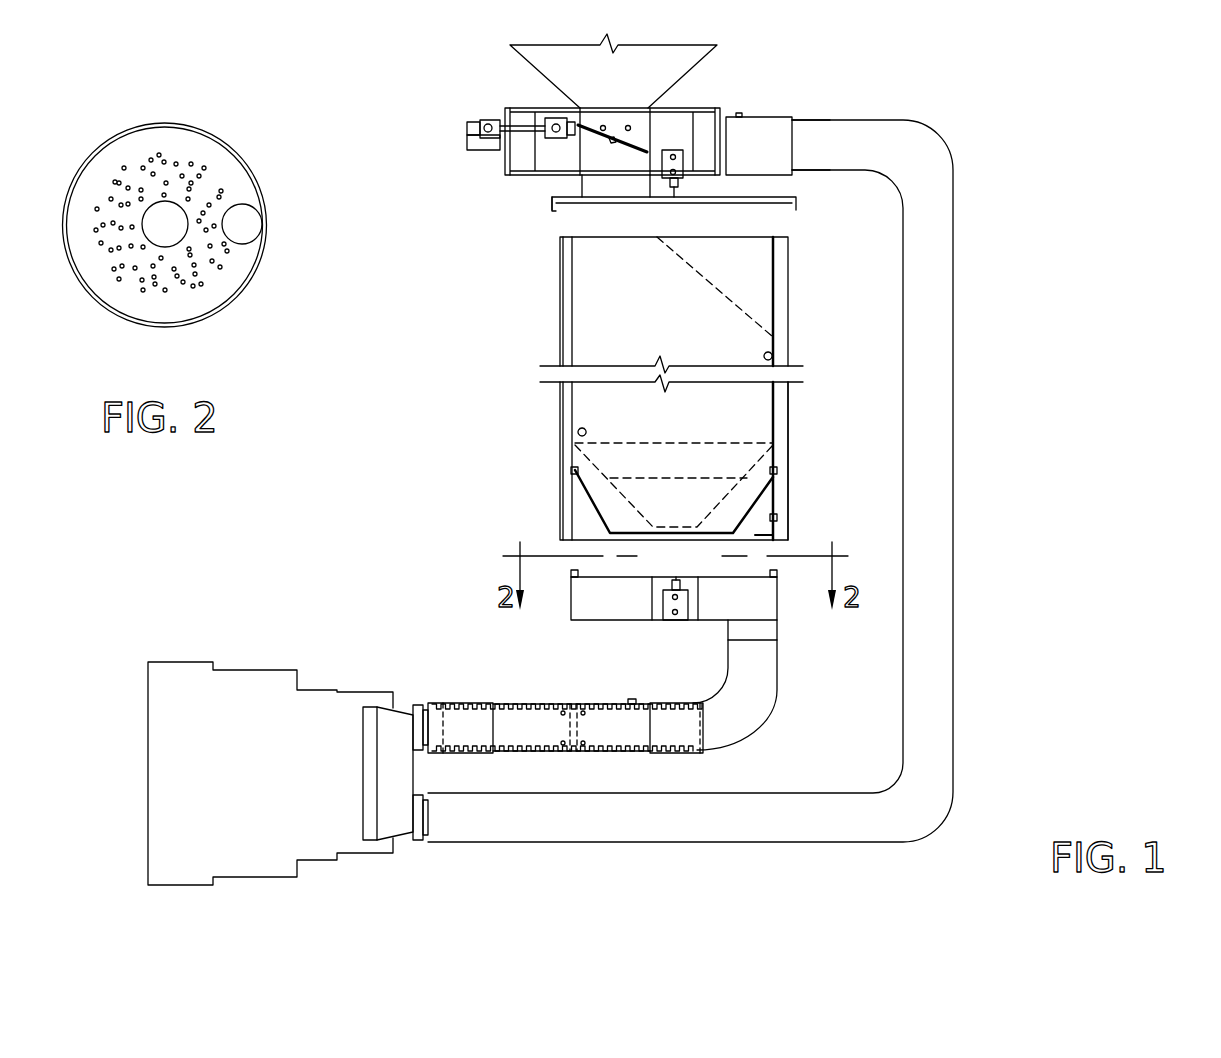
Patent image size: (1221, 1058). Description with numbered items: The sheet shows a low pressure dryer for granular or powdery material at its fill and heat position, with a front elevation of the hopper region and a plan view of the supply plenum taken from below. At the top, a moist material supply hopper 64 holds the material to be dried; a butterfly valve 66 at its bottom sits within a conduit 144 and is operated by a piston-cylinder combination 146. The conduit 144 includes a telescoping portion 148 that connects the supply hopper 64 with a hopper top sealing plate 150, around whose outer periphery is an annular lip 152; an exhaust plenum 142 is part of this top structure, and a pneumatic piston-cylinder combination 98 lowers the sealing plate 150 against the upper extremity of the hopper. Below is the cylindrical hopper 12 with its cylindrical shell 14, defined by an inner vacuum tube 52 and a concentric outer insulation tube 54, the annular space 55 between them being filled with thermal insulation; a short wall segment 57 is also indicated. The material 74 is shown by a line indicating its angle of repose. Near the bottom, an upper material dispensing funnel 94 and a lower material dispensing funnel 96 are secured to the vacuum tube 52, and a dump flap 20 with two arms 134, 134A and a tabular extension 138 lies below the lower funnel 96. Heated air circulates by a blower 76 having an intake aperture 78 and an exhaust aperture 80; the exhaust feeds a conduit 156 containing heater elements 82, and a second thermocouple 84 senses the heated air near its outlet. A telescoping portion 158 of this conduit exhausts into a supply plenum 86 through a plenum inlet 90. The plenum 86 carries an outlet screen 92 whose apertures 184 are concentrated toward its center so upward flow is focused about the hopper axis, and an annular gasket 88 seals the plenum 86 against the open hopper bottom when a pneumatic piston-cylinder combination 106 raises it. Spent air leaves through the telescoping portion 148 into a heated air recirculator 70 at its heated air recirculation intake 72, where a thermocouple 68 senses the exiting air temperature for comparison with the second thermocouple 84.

In FIG. 1, the cylindrical hopper 12 is at (545, 347).
In FIG. 1, the cylindrical shell 14 is at (549, 289).
In FIG. 1, the dump flap 20 is at (620, 520).
In FIG. 1, the vacuum tube 52 is at (772, 352).
In FIG. 1, the insulation tube 54 is at (560, 397).
In FIG. 1, the annular space 55 is at (780, 300).
In FIG. 1, the right lower wall 57 is at (788, 397).
In FIG. 1, the moist material supply hopper 64 is at (678, 45).
In FIG. 1, the butterfly valve 66 is at (635, 130).
In FIG. 1, the thermocouple 68 is at (774, 116).
In FIG. 1, the heated air recirculator 70 is at (953, 145).
In FIG. 1, the heated air recirculation intake 72 is at (800, 120).
In FIG. 1, the material 74 is at (717, 290).
In FIG. 1, the blower 76 is at (292, 658).
In FIG. 1, the intake aperture 78 is at (437, 818).
In FIG. 1, the exhaust aperture 80 is at (436, 695).
In FIG. 1, the heater elements 82 is at (530, 723).
In FIG. 1, the second thermocouple 84 is at (632, 699).
In FIG. 1, the supply plenum 86 is at (620, 627).
In FIG. 1, the annular gasket 88 is at (570, 562).
In FIG. 2, the annular gasket 88 is at (200, 326).
In FIG. 1, the plenum inlet 90 is at (765, 605).
In FIG. 2, the plenum inlet 90 is at (262, 225).
In FIG. 2, the outlet screen 92 is at (232, 278).
In FIG. 1, the upper material dispensing funnel 94 is at (723, 443).
In FIG. 1, the lower material dispensing funnel 96 is at (747, 485).
In FIG. 1, the pneumatic piston-cylinder combination 98 is at (700, 158).
In FIG. 1, the pneumatic piston-cylinder combination 106 is at (690, 624).
In FIG. 1, the arm 134 is at (745, 505).
In FIG. 1, the arm 134A is at (580, 493).
In FIG. 1, the tabular extension 138 is at (773, 535).
In FIG. 1, the exhaust plenum 142 is at (731, 107).
In FIG. 1, the conduit 144 is at (566, 159).
In FIG. 1, the piston-cylinder combination 146 is at (490, 122).
In FIG. 1, the telescoping portion 148 is at (575, 184).
In FIG. 1, the hopper top sealing plate 150 is at (747, 203).
In FIG. 1, the annular lip 152 is at (552, 208).
In FIG. 1, the conduit 156 is at (752, 712).
In FIG. 1, the telescoping portion 158 is at (763, 632).
In FIG. 2, the apertures 184 is at (182, 160).